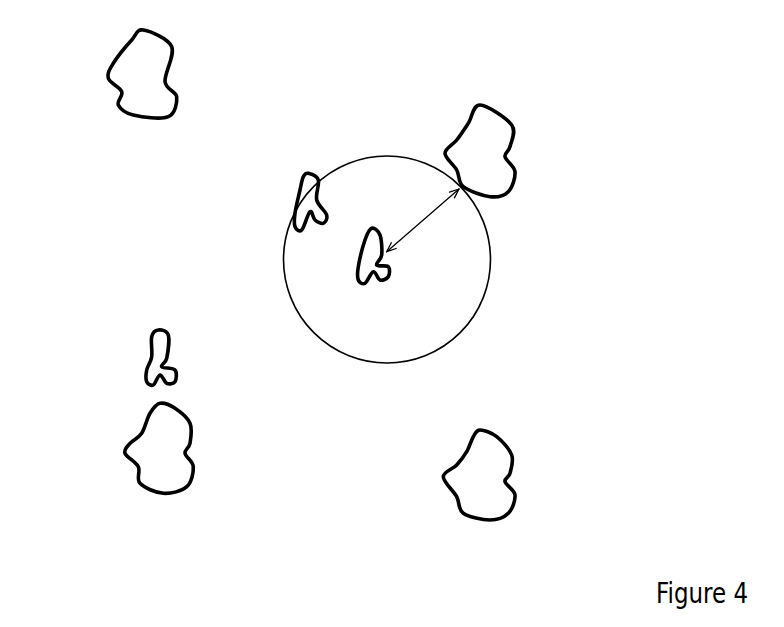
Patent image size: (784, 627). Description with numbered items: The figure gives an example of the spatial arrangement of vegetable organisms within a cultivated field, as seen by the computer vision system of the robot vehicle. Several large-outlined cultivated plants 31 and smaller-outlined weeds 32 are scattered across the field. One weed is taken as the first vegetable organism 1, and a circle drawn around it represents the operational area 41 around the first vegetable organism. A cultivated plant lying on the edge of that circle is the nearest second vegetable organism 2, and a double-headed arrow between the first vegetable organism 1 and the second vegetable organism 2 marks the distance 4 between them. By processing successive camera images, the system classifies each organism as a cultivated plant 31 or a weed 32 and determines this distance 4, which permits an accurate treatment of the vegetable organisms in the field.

The first vegetable organism 1 is at (378, 278).
The second vegetable organism 2 is at (483, 172).
The distance between the first and second vegetable organisms 4 is at (423, 229).
The cultivated plant 31 is at (123, 73).
The weed 32 is at (305, 175).
The operational area around the first vegetable organisms 41 is at (470, 273).